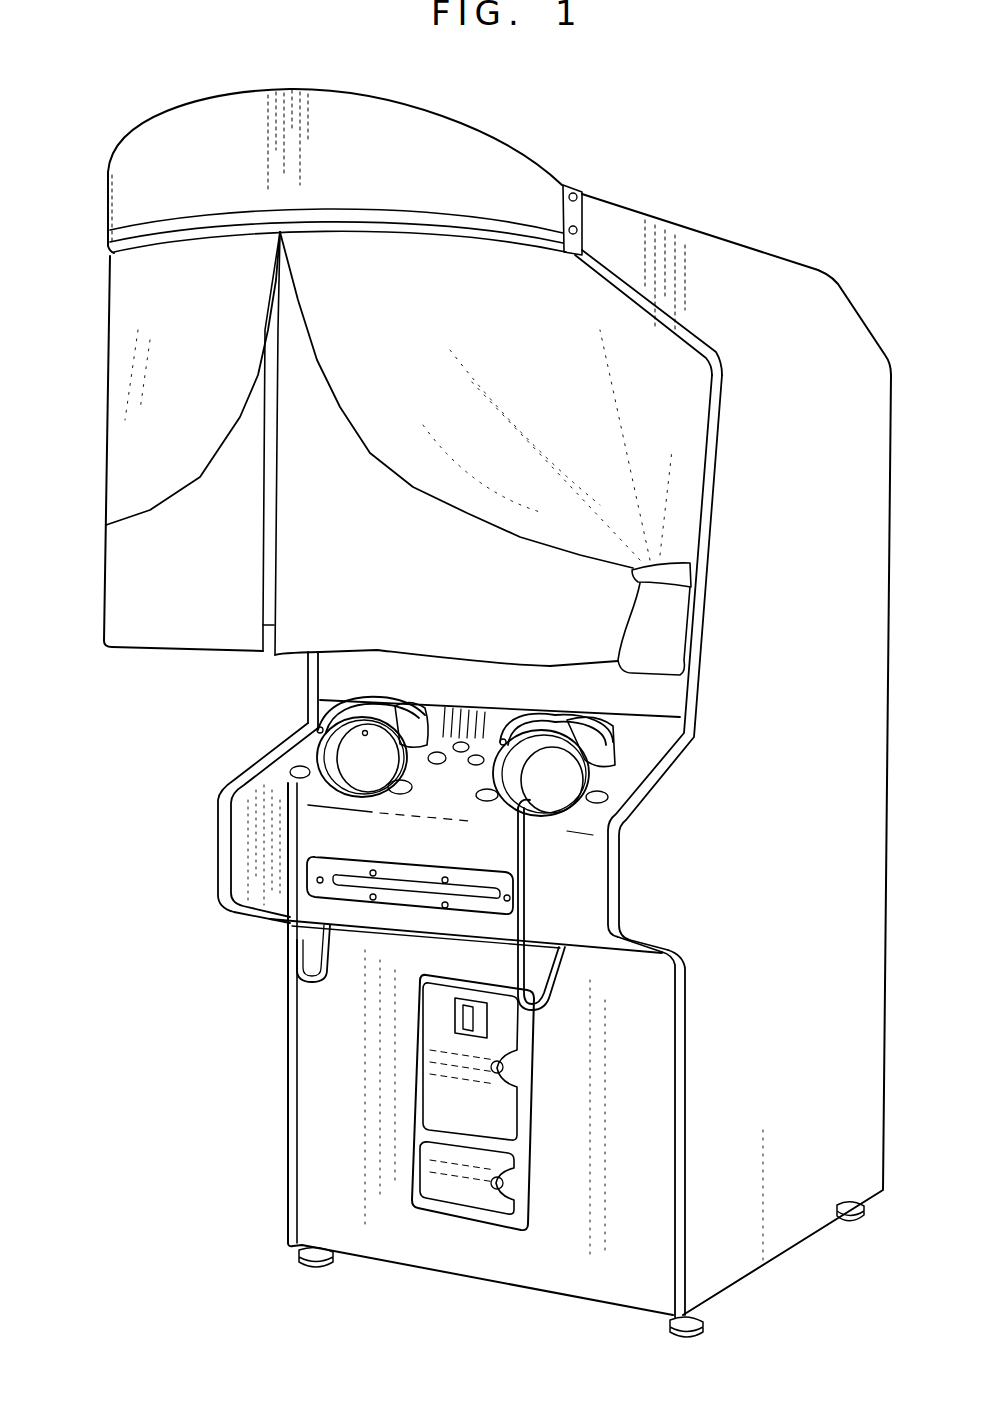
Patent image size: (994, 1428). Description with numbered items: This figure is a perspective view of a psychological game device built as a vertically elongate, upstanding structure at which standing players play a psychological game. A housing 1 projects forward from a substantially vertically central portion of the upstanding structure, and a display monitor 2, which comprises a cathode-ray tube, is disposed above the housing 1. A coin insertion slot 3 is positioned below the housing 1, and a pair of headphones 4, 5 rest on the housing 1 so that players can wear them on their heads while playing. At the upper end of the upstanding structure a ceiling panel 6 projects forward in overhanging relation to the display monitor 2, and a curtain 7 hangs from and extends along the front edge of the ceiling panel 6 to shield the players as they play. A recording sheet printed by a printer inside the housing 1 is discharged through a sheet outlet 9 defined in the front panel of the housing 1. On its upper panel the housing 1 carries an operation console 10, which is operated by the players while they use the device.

The housing 1 is at (262, 822).
The display monitor 2 is at (347, 667).
The coin insertion slot 3 is at (473, 1018).
The headphone 4 is at (358, 770).
The headphone 5 is at (545, 790).
The ceiling panel 6 is at (197, 152).
The curtain 7 is at (167, 382).
The sheet outlet 9 is at (405, 905).
The operation console 10 is at (624, 770).